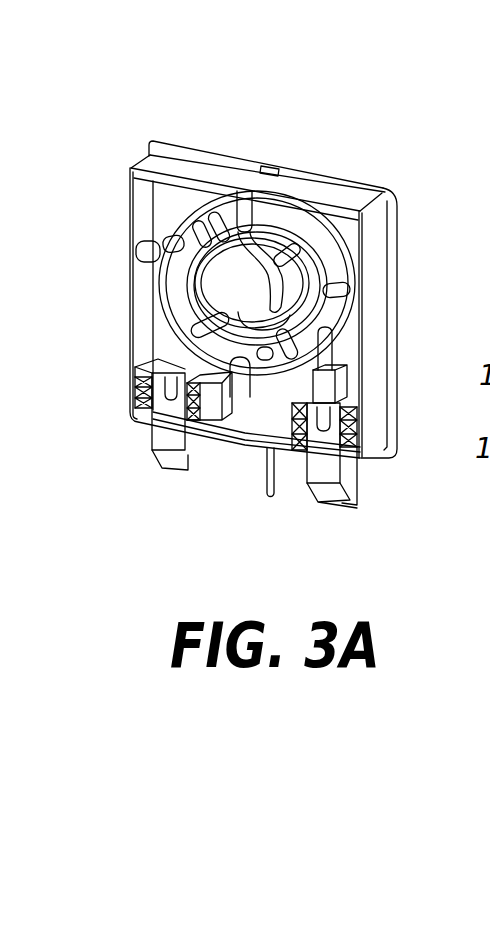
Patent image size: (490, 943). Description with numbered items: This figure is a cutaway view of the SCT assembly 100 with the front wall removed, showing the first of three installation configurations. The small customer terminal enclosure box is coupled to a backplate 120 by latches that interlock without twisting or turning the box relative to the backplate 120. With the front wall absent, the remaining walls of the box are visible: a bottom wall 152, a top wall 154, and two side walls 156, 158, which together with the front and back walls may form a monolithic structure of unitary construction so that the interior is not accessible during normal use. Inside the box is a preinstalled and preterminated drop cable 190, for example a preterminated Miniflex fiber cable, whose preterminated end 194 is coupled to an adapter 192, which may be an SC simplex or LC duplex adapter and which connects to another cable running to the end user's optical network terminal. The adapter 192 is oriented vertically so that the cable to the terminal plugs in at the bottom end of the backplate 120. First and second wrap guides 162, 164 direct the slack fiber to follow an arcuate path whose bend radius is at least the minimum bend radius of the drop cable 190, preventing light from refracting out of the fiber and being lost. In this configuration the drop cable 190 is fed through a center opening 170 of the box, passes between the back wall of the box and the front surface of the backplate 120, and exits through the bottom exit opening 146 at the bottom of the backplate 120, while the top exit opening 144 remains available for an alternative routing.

The SCT assembly 100 is at (246, 127).
The backplate 120 is at (399, 249).
The top exit opening 144 is at (278, 155).
The bottom exit opening 146 is at (247, 460).
The bottom wall 152 is at (233, 428).
The top wall 154 is at (185, 167).
The side wall 156 is at (363, 343).
The side wall 158 is at (130, 300).
The first wrap guide 162 is at (347, 297).
The second wrap guide 164 is at (302, 257).
The center opening 170 is at (233, 280).
The drop cable 190 is at (328, 217).
The adapter 192 is at (352, 480).
The preterminated end 194 is at (348, 390).